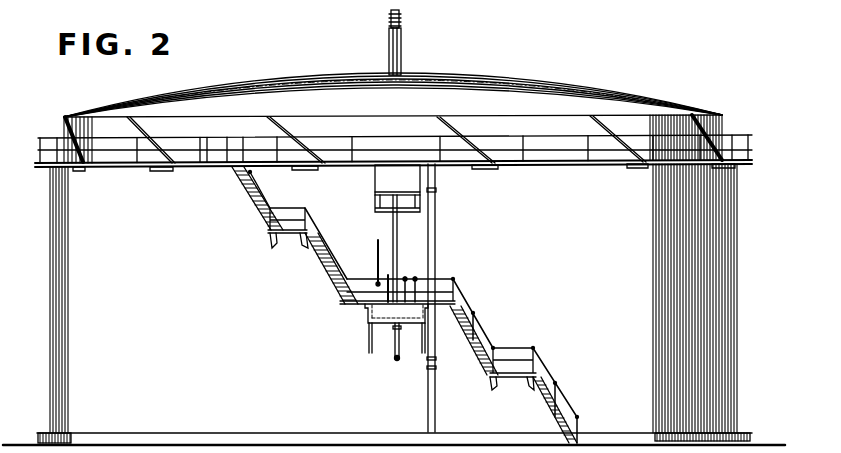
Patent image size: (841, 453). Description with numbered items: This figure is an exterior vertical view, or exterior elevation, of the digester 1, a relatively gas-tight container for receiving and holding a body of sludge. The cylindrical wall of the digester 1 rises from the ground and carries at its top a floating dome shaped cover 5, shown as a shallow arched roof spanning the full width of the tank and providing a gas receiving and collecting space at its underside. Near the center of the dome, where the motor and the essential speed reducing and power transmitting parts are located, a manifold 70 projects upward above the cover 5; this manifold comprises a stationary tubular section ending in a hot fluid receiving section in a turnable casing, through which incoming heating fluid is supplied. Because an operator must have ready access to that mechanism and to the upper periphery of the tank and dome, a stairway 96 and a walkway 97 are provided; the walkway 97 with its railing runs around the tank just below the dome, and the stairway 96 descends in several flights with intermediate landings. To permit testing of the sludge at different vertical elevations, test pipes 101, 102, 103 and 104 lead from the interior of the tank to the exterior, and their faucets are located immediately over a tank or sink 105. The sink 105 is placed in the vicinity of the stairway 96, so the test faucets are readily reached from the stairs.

The digester 1 is at (394, 280).
The floating dome shaped cover 5 is at (498, 98).
The manifold 70 is at (401, 20).
The stairway 96 is at (322, 258).
The walkway 97 is at (137, 152).
The test pipe 101 is at (416, 278).
The test pipe 102 is at (406, 278).
The test pipe 103 is at (389, 277).
The test pipe 104 is at (377, 242).
The tank or sink 105 is at (380, 315).